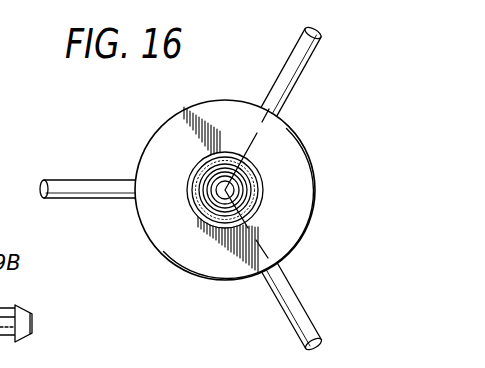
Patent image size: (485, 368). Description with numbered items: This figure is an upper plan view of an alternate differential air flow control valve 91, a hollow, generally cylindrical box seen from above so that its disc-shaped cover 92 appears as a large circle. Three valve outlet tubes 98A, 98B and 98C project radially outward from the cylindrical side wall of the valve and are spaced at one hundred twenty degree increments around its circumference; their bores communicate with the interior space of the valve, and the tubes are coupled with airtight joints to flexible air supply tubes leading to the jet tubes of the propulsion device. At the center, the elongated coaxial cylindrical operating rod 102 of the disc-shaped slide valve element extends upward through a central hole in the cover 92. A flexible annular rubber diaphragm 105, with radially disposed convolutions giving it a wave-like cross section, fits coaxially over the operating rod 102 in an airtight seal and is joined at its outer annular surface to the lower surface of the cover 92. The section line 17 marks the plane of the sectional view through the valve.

The control valve 91 is at (336, 144).
The disc-shaped cover 92 is at (316, 198).
The valve outlet tube 98A is at (299, 297).
The valve outlet tube 98B is at (311, 62).
The valve outlet tube 98C is at (66, 180).
The operating rod 102 is at (218, 199).
The rubber diaphragm 105 is at (202, 202).
The section line 17- 17 is at (295, 69).